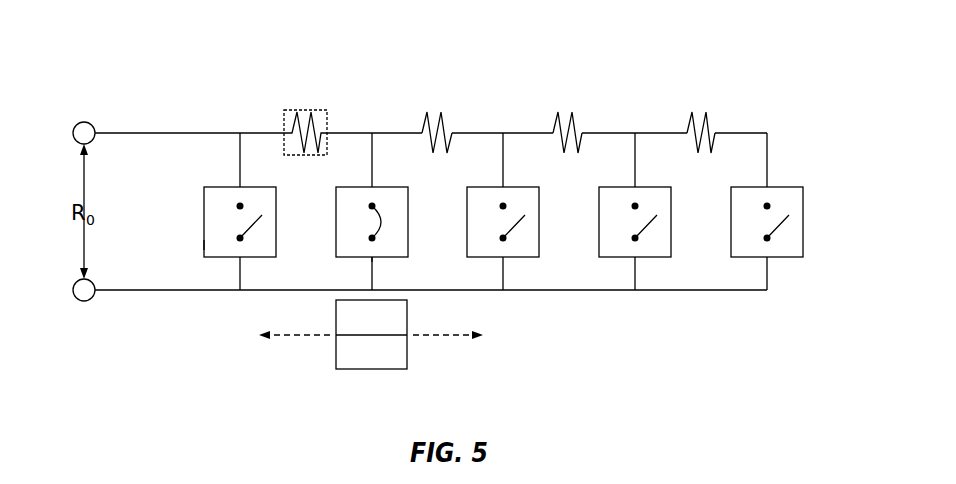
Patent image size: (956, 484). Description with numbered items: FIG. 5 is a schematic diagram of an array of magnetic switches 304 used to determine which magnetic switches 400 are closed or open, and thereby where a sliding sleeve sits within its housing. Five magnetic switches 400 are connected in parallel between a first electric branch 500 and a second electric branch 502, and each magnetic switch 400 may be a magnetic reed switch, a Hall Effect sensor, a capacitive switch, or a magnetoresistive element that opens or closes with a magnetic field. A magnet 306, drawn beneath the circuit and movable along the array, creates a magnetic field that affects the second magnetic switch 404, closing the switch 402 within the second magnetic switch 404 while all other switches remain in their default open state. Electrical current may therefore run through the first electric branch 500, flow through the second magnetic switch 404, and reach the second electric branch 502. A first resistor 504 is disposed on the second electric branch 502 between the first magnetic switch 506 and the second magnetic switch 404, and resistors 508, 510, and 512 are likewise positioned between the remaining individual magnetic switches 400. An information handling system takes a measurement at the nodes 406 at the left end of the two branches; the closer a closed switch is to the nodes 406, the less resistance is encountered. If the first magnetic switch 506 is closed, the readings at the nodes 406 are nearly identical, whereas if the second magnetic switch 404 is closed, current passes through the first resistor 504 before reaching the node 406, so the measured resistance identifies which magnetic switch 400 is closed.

The array of magnetic switches 304 is at (765, 40).
The magnet 306 is at (372, 370).
The magnetic switch 400 is at (223, 187).
The switch 402 is at (364, 223).
The second magnetic switch 404 is at (392, 258).
The node 406 is at (85, 121).
The first electric branch 500 is at (167, 292).
The second electric branch 502 is at (167, 132).
The first resistor 504 is at (318, 110).
The first magnetic switch 506 is at (204, 243).
The resistor 508 is at (447, 122).
The resistor 510 is at (578, 122).
The resistor 512 is at (711, 122).